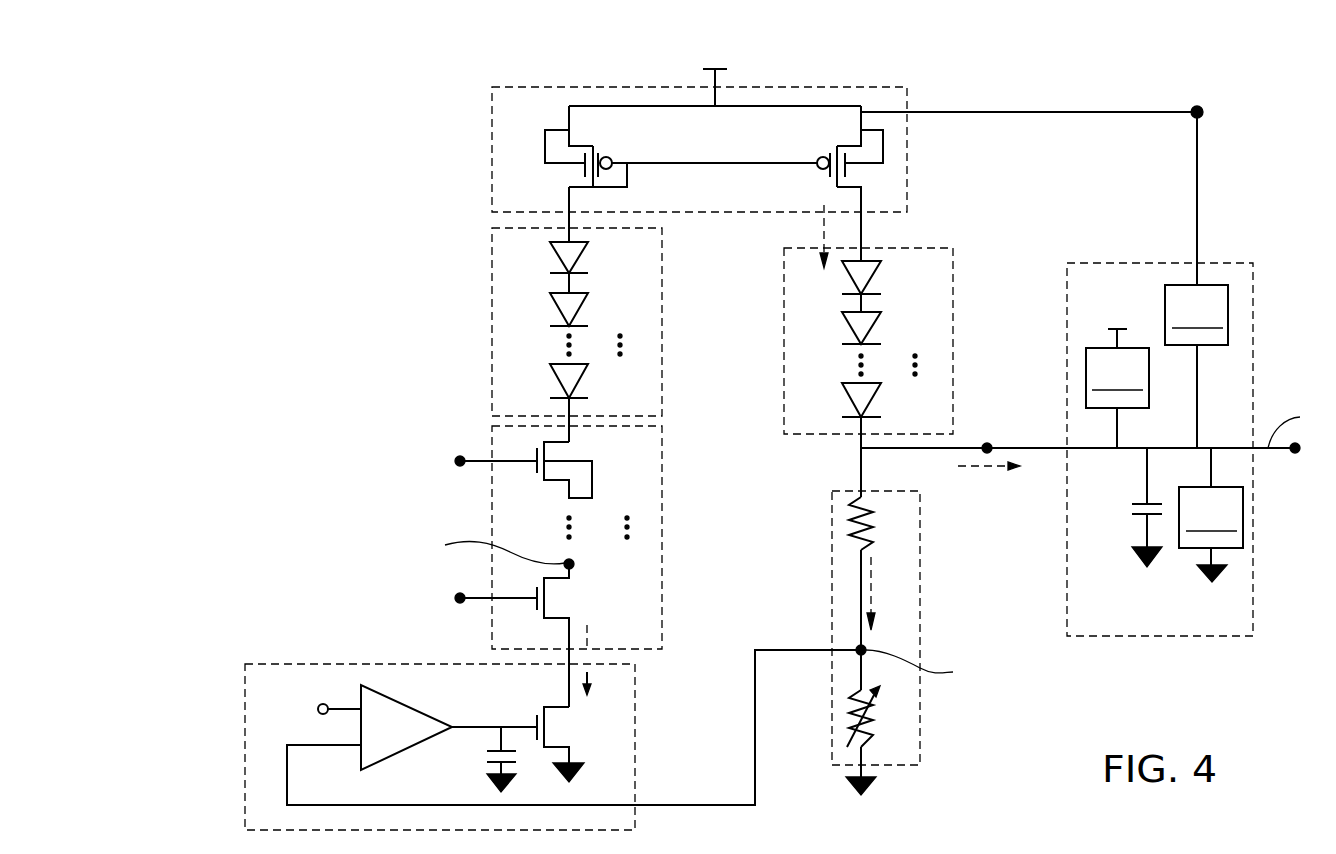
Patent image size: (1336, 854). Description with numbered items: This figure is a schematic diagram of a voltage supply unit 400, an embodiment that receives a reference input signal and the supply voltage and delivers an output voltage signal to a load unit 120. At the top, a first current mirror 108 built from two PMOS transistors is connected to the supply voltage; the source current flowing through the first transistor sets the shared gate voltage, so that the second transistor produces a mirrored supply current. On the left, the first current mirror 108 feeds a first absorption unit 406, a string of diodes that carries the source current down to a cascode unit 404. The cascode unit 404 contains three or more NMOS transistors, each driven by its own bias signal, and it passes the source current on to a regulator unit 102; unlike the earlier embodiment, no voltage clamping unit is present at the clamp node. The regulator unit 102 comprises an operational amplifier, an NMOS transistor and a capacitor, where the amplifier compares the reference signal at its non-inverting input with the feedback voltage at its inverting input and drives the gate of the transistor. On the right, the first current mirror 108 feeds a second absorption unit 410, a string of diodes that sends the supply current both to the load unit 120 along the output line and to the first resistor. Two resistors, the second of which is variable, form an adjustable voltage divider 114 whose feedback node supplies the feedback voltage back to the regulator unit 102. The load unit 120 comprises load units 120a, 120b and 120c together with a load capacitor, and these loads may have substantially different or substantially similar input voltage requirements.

The voltage supply unit 400 is at (342, 176).
The first current mirror 108 is at (493, 132).
The first absorption unit 406 is at (492, 281).
The cascode unit 404 is at (660, 490).
The second absorption unit 410 is at (784, 340).
The regulator unit 102 is at (328, 663).
The adjustable voltage divider 114 is at (898, 768).
The load unit 120 is at (1214, 638).
The load unit 120a is at (1196, 315).
The load unit 120b is at (1117, 378).
The load unit 120c is at (1211, 517).